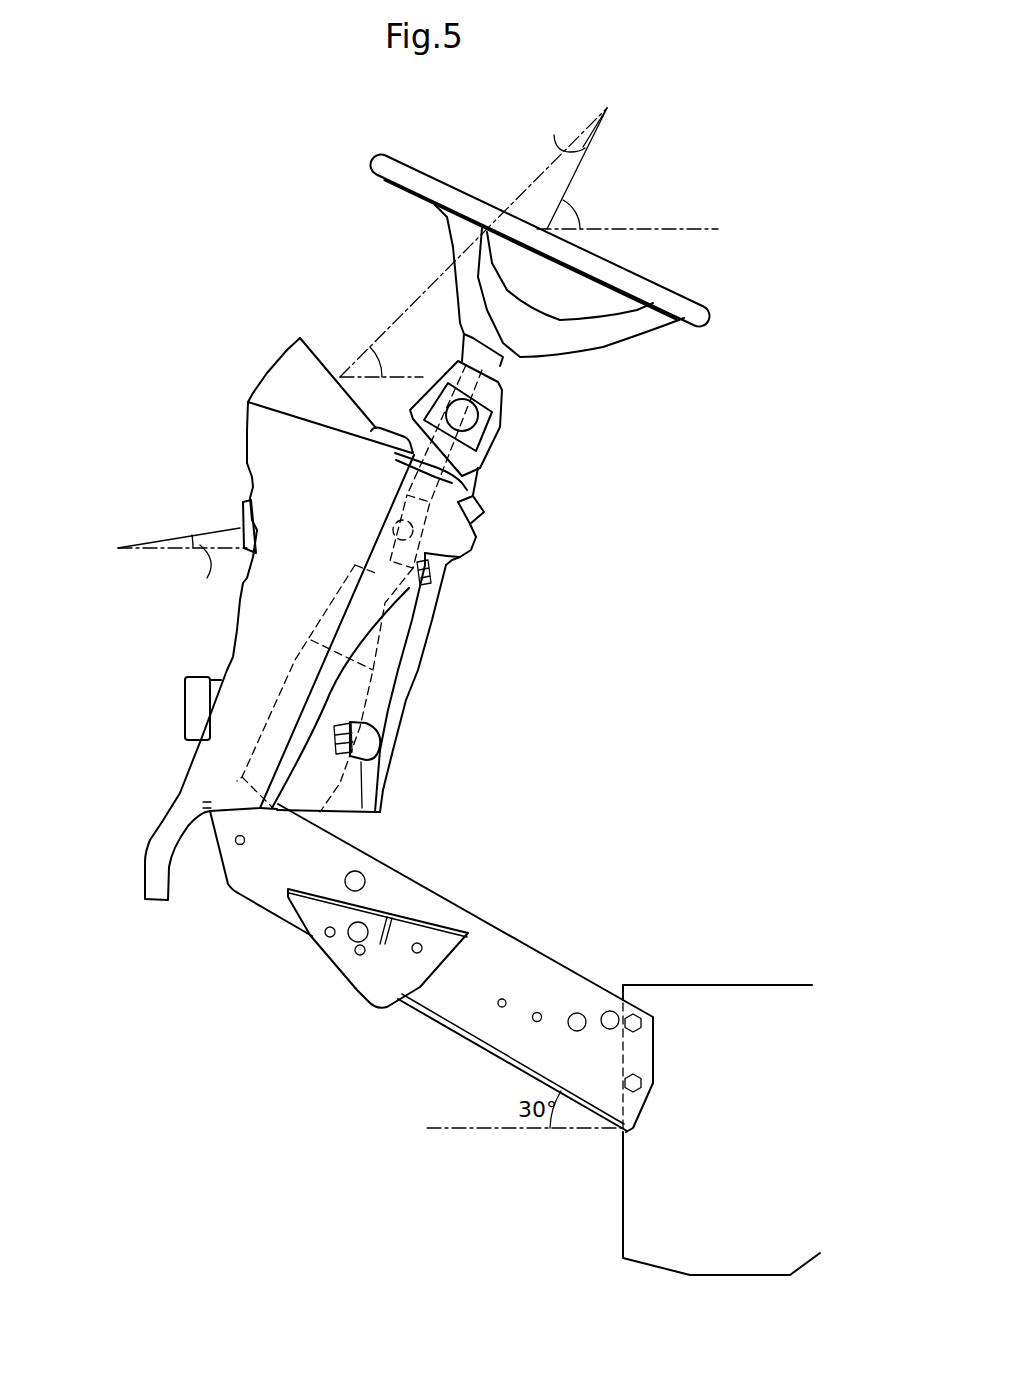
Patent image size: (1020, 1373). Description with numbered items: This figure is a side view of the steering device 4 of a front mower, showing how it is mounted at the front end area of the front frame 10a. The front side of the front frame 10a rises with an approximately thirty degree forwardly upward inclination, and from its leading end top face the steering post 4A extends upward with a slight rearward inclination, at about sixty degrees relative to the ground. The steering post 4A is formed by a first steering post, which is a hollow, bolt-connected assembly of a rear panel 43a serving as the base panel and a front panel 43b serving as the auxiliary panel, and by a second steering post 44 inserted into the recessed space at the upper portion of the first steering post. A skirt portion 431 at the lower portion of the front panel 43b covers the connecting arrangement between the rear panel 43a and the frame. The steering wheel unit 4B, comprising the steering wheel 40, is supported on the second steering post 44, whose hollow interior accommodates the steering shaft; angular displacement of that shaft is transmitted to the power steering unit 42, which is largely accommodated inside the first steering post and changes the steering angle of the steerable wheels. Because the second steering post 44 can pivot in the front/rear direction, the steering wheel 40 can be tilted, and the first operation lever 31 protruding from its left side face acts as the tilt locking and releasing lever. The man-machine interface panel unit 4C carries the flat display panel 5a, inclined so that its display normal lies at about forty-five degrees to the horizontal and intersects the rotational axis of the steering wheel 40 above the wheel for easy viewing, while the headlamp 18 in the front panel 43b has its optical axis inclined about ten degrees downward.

The steering device 4 is at (347, 251).
The steering post 4A is at (413, 701).
The steering wheel unit 4B is at (627, 347).
The man-machine interface panel unit 4C is at (226, 409).
The flat display panel 5a is at (325, 360).
The front frame 10a is at (528, 972).
The headlamp 18 is at (243, 512).
The first operation lever 31 is at (479, 421).
The steering wheel 40 is at (446, 178).
The power steering unit 42 is at (333, 598).
The rear panel 43a is at (422, 638).
The front panel 43b is at (232, 648).
The skirt portion 431 is at (163, 869).
The second steering post 44 is at (512, 404).